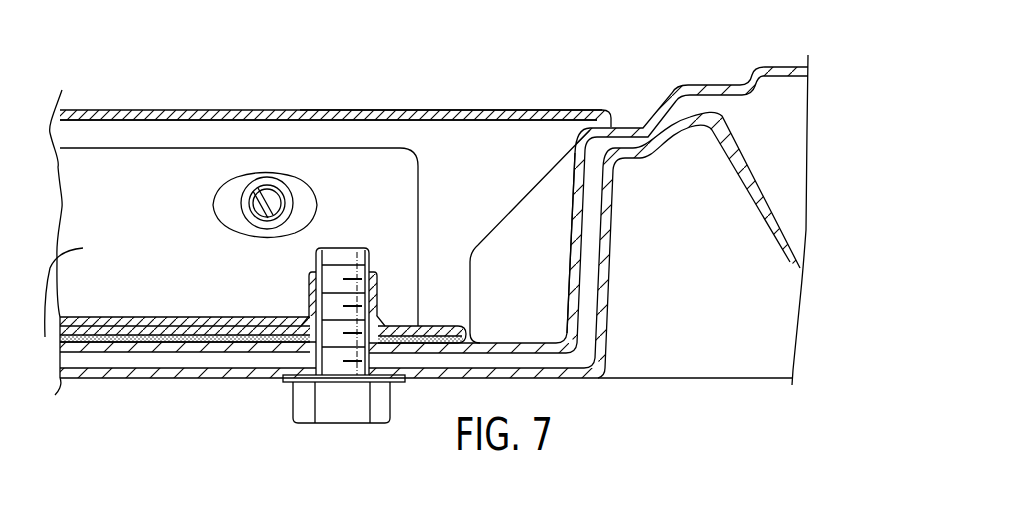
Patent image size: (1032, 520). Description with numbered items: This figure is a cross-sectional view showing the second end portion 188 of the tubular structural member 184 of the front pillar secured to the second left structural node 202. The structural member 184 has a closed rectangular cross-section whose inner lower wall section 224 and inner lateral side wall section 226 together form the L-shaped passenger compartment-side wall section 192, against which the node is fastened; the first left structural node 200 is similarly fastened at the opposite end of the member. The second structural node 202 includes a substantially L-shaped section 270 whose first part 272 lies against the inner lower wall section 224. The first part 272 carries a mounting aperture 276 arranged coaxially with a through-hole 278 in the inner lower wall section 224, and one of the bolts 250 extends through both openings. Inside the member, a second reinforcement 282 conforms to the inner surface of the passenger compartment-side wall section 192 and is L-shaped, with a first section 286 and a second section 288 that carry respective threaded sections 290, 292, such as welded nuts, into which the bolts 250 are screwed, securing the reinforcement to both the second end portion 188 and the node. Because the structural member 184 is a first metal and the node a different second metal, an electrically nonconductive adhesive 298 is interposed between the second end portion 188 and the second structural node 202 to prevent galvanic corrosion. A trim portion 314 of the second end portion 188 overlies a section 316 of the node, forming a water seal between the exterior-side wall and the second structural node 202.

The structural member 184 is at (249, 95).
The second end portion 188 is at (328, 110).
The passenger compartment-side wall section 192 is at (503, 136).
The first left structural node 200 is at (163, 110).
The second left structural node 202 is at (660, 347).
The inner lower wall section 224 is at (441, 326).
The inner lateral side wall section 226 is at (452, 133).
The bolts 250 is at (343, 413).
The L-shaped section 270 is at (543, 273).
The first part 272 is at (432, 356).
The mounting aperture 276 is at (308, 353).
The through-hole 278 is at (310, 324).
The second reinforcement 282 is at (117, 177).
The first section 286 is at (117, 317).
The second section 288 is at (62, 345).
The threaded section 290 is at (382, 280).
The threaded section 292 is at (233, 217).
The electrically nonconductive adhesive 298 is at (113, 343).
The trim portion 314 is at (605, 122).
The section 316 is at (647, 135).